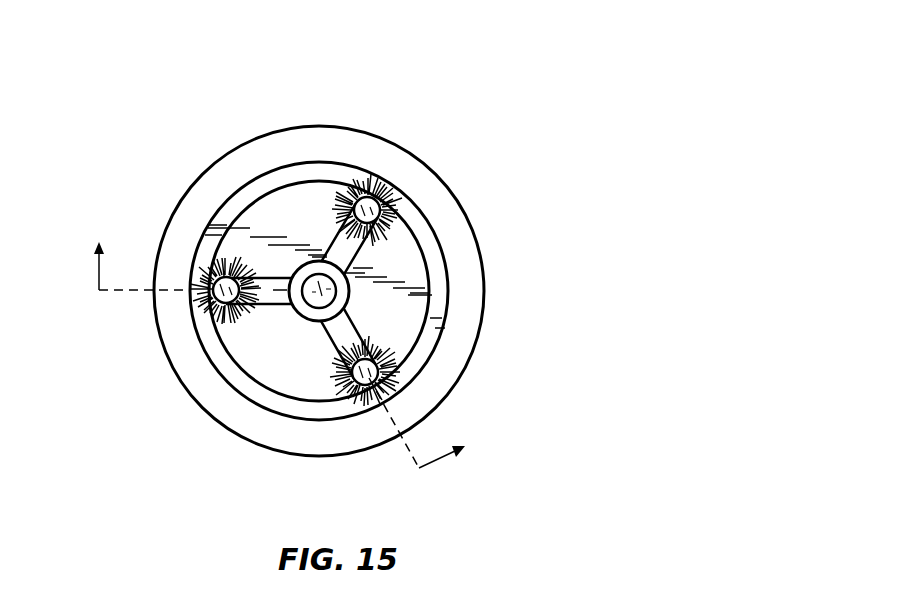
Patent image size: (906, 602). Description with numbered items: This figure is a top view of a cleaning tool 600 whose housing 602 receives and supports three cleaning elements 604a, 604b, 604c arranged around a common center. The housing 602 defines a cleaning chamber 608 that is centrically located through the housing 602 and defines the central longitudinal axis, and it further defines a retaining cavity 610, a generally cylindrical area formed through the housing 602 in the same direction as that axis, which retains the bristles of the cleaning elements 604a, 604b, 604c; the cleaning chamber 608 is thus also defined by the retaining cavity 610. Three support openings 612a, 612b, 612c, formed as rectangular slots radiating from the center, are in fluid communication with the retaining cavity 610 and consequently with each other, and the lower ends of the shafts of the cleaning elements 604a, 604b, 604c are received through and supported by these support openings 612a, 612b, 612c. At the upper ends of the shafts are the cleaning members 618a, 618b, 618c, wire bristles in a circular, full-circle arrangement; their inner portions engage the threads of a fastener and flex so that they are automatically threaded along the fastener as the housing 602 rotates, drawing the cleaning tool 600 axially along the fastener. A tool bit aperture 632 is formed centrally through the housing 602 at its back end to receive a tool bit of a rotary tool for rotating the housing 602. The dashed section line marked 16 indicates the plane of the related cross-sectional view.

The cleaning tool 600 is at (174, 92).
The housing 602 is at (275, 432).
The cleaning chamber 608 is at (298, 335).
The retaining cavity 610 is at (265, 363).
The support opening 612a is at (271, 282).
The support opening 612b is at (346, 260).
The support opening 612c is at (353, 321).
The tool bit aperture 632 is at (318, 262).
The cleaning element 604a is at (168, 334).
The cleaning member 618a is at (230, 298).
The cleaning element 604b is at (384, 137).
The cleaning member 618b is at (368, 194).
The cleaning element 604c is at (448, 376).
The cleaning member 618c is at (378, 372).
The section line 16- 16 is at (291, 343).